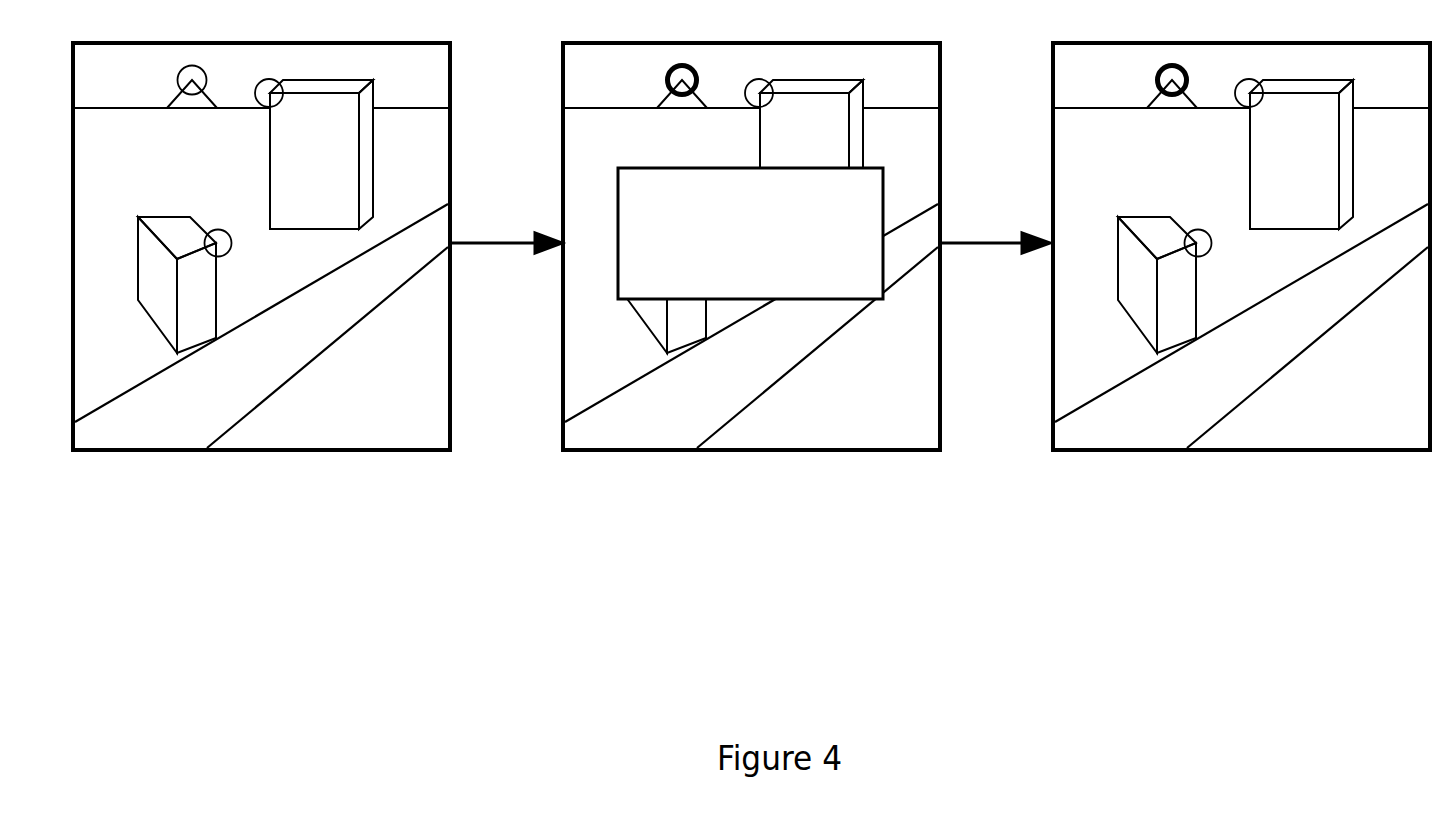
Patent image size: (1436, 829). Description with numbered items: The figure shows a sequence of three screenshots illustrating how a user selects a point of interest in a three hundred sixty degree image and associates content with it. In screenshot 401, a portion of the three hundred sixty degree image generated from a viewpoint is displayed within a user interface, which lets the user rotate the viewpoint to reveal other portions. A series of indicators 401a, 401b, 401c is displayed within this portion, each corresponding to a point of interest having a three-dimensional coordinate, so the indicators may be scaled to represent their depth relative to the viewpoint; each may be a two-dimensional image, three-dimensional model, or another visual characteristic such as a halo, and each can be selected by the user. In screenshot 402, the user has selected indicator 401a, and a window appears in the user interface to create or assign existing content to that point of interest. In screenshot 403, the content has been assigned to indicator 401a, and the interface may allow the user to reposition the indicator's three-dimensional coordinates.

The screenshot 401 is at (261, 264).
The screenshot 402 is at (751, 265).
The screenshot 403 is at (1241, 260).
The indicator 401a is at (657, 87).
The indicator 401b is at (798, 139).
The indicator 401c is at (704, 285).